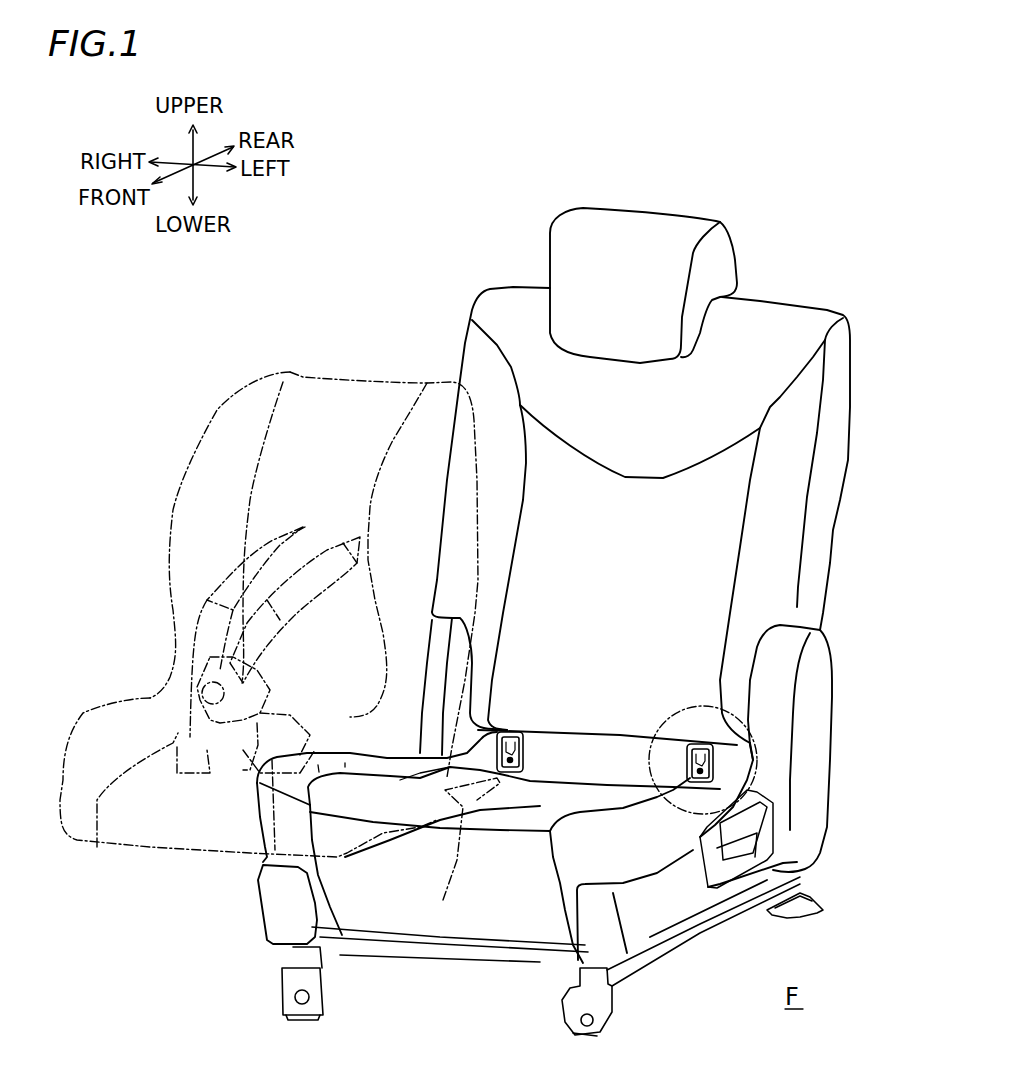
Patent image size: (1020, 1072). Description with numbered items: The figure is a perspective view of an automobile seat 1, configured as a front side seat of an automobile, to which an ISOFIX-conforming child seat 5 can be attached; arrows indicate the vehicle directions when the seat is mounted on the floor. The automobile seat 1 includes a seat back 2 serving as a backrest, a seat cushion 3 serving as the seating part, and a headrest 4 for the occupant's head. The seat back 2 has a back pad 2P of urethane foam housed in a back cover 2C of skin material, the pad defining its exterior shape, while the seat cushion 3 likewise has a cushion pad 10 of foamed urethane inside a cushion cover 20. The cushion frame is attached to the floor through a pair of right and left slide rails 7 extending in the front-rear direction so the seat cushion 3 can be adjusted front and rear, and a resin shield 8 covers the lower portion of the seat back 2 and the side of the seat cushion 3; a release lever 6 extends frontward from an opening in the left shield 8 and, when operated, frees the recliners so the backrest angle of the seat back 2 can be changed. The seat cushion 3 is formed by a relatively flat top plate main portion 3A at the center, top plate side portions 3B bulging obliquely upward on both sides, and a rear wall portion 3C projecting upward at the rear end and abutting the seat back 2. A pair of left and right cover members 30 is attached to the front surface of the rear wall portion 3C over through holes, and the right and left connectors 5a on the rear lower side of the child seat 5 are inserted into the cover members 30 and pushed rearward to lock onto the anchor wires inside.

The automobile seat 1 is at (790, 262).
The seat back 2 is at (654, 579).
The back pad 2P is at (790, 436).
The back cover 2C is at (790, 485).
The seat cushion 3 is at (537, 847).
The top plate main portion 3A is at (537, 808).
The top plate side portions 3B is at (375, 763).
The rear wall portion 3C is at (593, 760).
The headrest 4 is at (553, 230).
The child seat 5 is at (218, 410).
The connector 5a is at (443, 900).
The release lever 6 is at (750, 827).
The slide rails 7 is at (350, 950).
The shield 8 is at (812, 752).
The cushion pad 10 is at (345, 763).
The cushion cover 20 is at (318, 765).
The cover members 30 is at (530, 735).